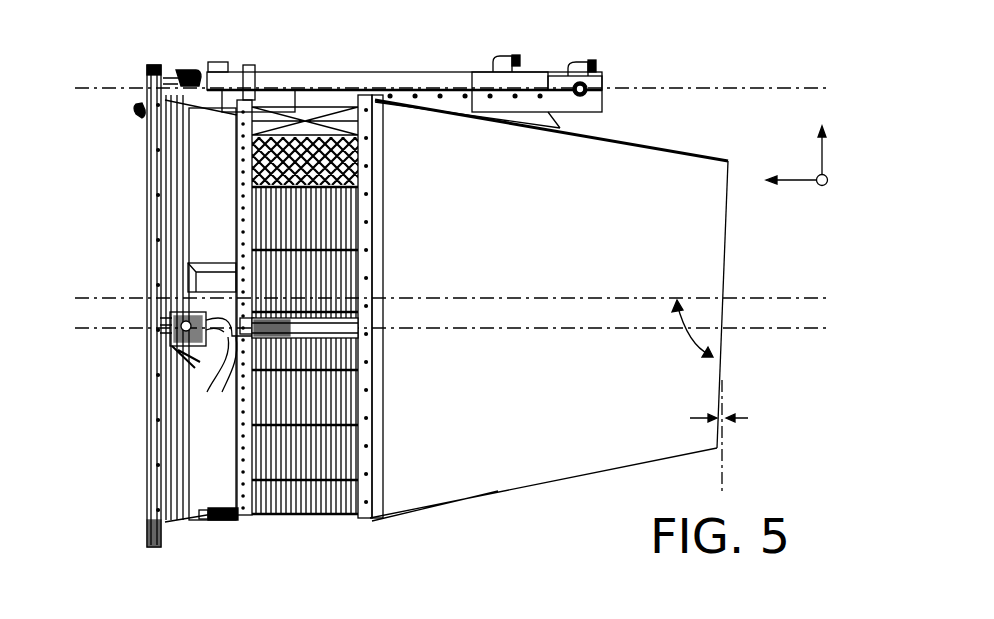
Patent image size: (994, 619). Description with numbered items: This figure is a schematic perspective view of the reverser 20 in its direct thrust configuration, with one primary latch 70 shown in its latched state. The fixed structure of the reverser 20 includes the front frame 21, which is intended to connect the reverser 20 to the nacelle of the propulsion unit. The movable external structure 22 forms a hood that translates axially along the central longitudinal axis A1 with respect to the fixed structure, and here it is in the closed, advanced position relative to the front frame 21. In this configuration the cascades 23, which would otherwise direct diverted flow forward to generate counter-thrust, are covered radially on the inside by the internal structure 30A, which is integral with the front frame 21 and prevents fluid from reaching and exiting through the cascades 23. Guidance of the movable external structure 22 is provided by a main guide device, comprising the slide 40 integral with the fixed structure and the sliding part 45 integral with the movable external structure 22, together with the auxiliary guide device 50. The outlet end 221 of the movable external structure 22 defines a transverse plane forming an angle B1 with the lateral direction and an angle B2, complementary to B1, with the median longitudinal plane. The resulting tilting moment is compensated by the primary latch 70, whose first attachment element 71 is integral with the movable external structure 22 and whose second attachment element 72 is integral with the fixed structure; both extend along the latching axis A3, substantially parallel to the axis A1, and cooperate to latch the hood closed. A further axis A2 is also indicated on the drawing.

The reverser 20 is at (724, 58).
The front frame 21 is at (147, 190).
The movable external structure 22 is at (605, 331).
The outlet end 221 is at (727, 251).
The cascades 23 is at (314, 508).
The internal structure 30A is at (218, 470).
The slide 40 is at (198, 77).
The sliding part 45 is at (385, 80).
The auxiliary guide device 50 is at (230, 514).
The primary latch 70 is at (139, 403).
The first attachment element 71 is at (232, 337).
The second attachment element 72 is at (217, 350).
The central longitudinal axis A1 is at (85, 298).
The axis A2 is at (77, 88).
The latching axis A3 is at (118, 330).
The angle B1 is at (723, 432).
The angle B2 is at (700, 346).